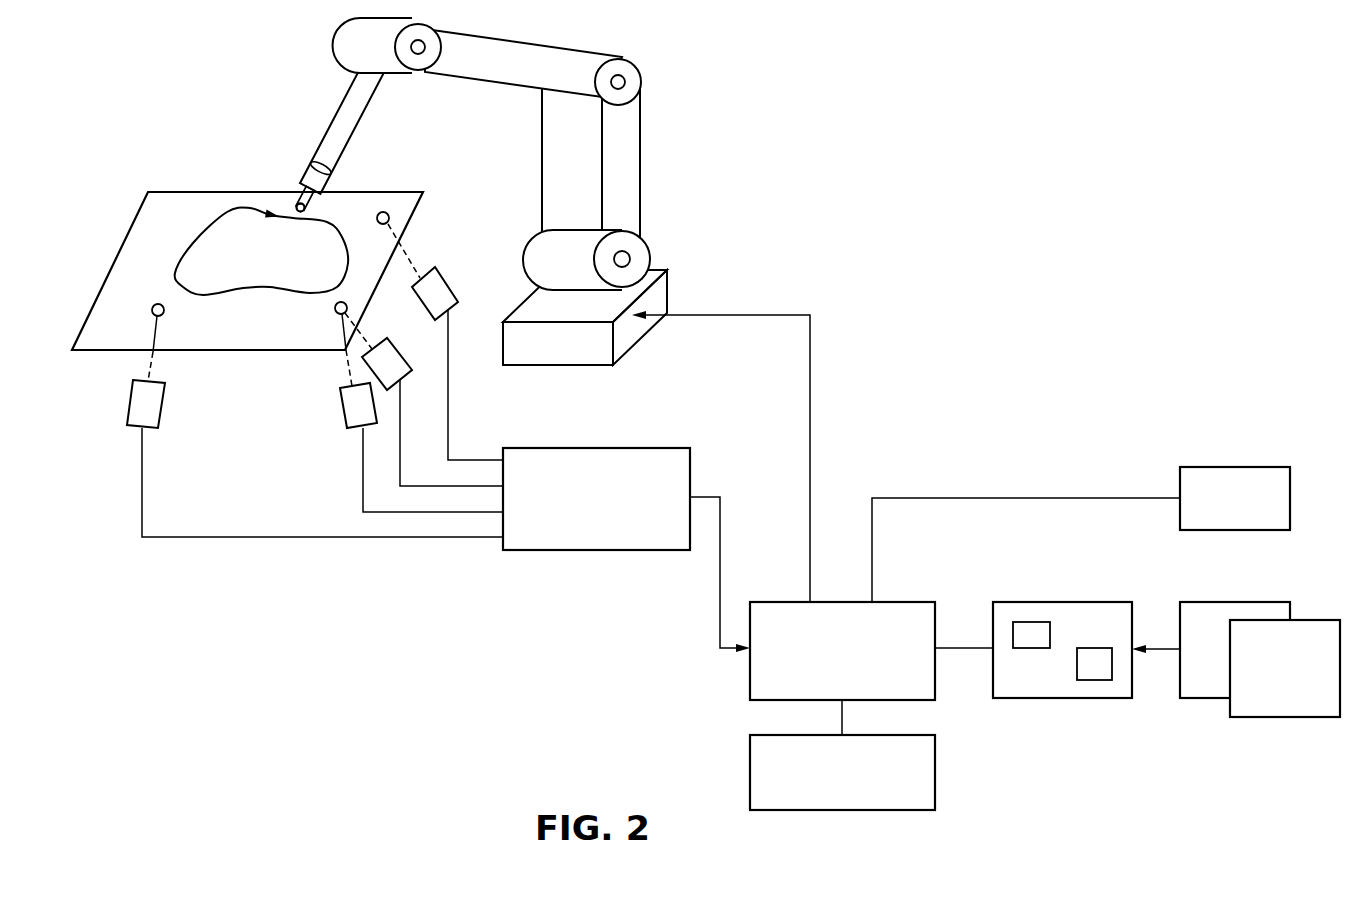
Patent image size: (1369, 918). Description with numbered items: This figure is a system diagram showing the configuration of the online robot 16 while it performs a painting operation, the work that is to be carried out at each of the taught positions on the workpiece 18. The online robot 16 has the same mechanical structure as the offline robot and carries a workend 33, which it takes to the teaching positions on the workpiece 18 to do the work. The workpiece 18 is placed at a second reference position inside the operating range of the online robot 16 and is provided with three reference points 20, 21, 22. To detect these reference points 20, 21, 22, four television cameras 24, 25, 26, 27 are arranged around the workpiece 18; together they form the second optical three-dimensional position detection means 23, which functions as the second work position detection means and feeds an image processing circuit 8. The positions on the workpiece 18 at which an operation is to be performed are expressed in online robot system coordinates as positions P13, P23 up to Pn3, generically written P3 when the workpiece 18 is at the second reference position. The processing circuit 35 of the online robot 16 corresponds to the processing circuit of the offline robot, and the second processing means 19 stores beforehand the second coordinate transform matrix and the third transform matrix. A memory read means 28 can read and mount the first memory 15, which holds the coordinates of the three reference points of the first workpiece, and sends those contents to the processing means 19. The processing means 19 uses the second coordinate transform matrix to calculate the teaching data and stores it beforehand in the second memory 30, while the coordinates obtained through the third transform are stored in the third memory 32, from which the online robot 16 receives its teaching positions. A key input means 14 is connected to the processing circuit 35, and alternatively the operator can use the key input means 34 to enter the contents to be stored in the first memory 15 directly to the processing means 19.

The image processing circuit 8 is at (604, 447).
The key input means 14 is at (750, 776).
The first memory 15 is at (1291, 718).
The online robot 16 is at (648, 160).
The workpiece 18 is at (184, 197).
The second processing means 19 is at (1065, 601).
The reference point 20 is at (155, 303).
The reference point 21 is at (343, 302).
The reference point 22 is at (390, 215).
The second optical three-dimensional position detection means 23 is at (462, 247).
The television camera 24 is at (127, 408).
The television camera 25 is at (343, 410).
The television camera 26 is at (398, 352).
The television camera 27 is at (445, 287).
The memory read means 28 is at (1236, 601).
The second memory 30 is at (1102, 673).
The third memory 32 is at (1022, 642).
The workend 33 is at (291, 199).
The key input means 34 is at (1228, 466).
The processing circuit 35 is at (912, 601).
The position Pn3 is at (197, 297).
The position P23 is at (268, 292).
The position P13 is at (225, 298).
The coordinates P3 is at (290, 298).